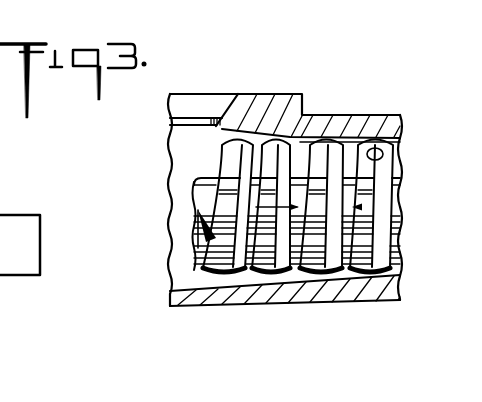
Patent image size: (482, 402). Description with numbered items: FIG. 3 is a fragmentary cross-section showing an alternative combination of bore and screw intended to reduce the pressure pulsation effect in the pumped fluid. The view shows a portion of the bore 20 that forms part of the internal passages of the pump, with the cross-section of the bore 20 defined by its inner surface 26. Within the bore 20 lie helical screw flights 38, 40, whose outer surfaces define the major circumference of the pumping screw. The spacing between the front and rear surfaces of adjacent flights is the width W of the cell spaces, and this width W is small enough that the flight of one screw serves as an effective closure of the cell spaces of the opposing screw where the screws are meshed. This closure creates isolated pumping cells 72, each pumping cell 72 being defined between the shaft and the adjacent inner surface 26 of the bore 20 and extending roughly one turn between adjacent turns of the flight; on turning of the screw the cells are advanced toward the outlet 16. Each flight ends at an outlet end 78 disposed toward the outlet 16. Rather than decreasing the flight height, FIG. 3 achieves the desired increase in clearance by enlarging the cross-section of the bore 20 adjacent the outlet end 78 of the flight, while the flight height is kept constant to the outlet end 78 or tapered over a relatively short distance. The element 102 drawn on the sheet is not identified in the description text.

The outlet 16 is at (235, 104).
The bore 20 is at (397, 147).
The inner surface 26 is at (372, 276).
The helical screw flight 38 is at (306, 158).
The helical screw flight 40 is at (325, 156).
The pumping cell 72 is at (336, 225).
The outlet end 78 is at (205, 238).
The controller 102 is at (4, 212).
The width of the cell spaces W is at (358, 206).